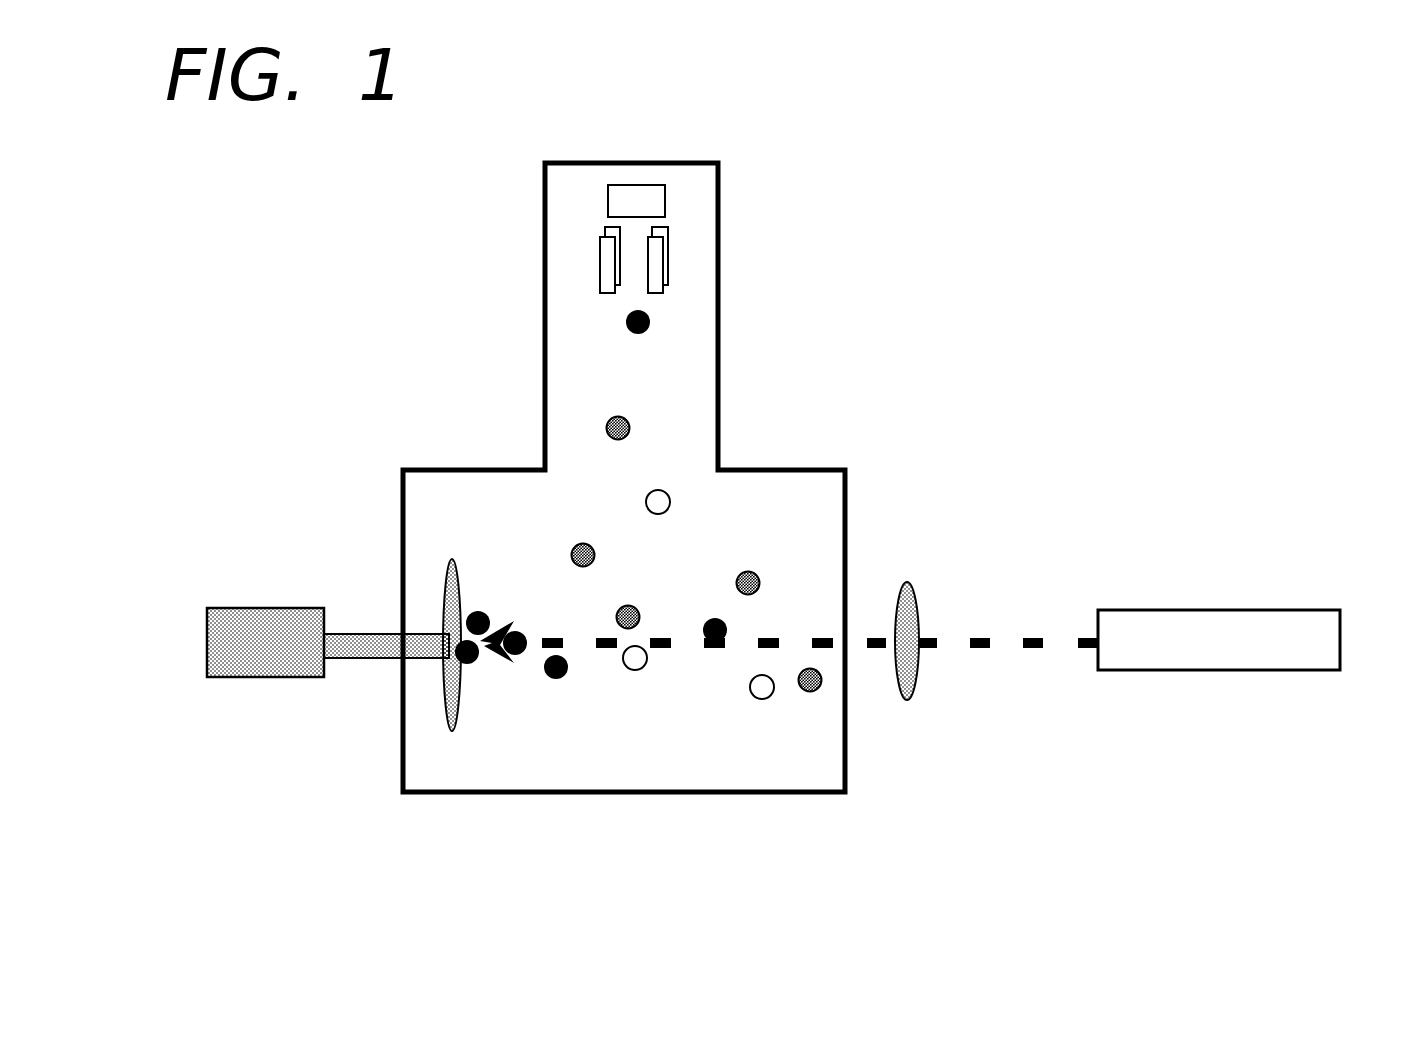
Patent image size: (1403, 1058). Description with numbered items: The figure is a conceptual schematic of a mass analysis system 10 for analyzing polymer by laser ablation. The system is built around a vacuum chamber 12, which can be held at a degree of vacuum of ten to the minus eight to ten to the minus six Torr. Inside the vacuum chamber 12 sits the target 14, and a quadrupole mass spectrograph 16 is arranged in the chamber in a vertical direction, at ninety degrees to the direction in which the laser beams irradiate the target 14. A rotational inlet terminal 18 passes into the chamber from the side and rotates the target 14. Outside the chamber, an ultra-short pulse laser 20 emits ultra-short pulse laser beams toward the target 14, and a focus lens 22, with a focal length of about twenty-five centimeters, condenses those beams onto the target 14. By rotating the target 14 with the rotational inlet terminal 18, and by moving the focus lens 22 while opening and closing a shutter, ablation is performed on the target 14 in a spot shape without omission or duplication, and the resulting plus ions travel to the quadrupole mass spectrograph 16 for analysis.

The mass analysis system 10 is at (791, 143).
The vacuum chamber 12 is at (848, 778).
The target 14 is at (433, 558).
The quadrupole mass spectrograph 16 is at (686, 233).
The rotational inlet terminal 18 is at (201, 590).
The ultra-short pulse laser 20 is at (1298, 610).
The focus lens 22 is at (862, 738).